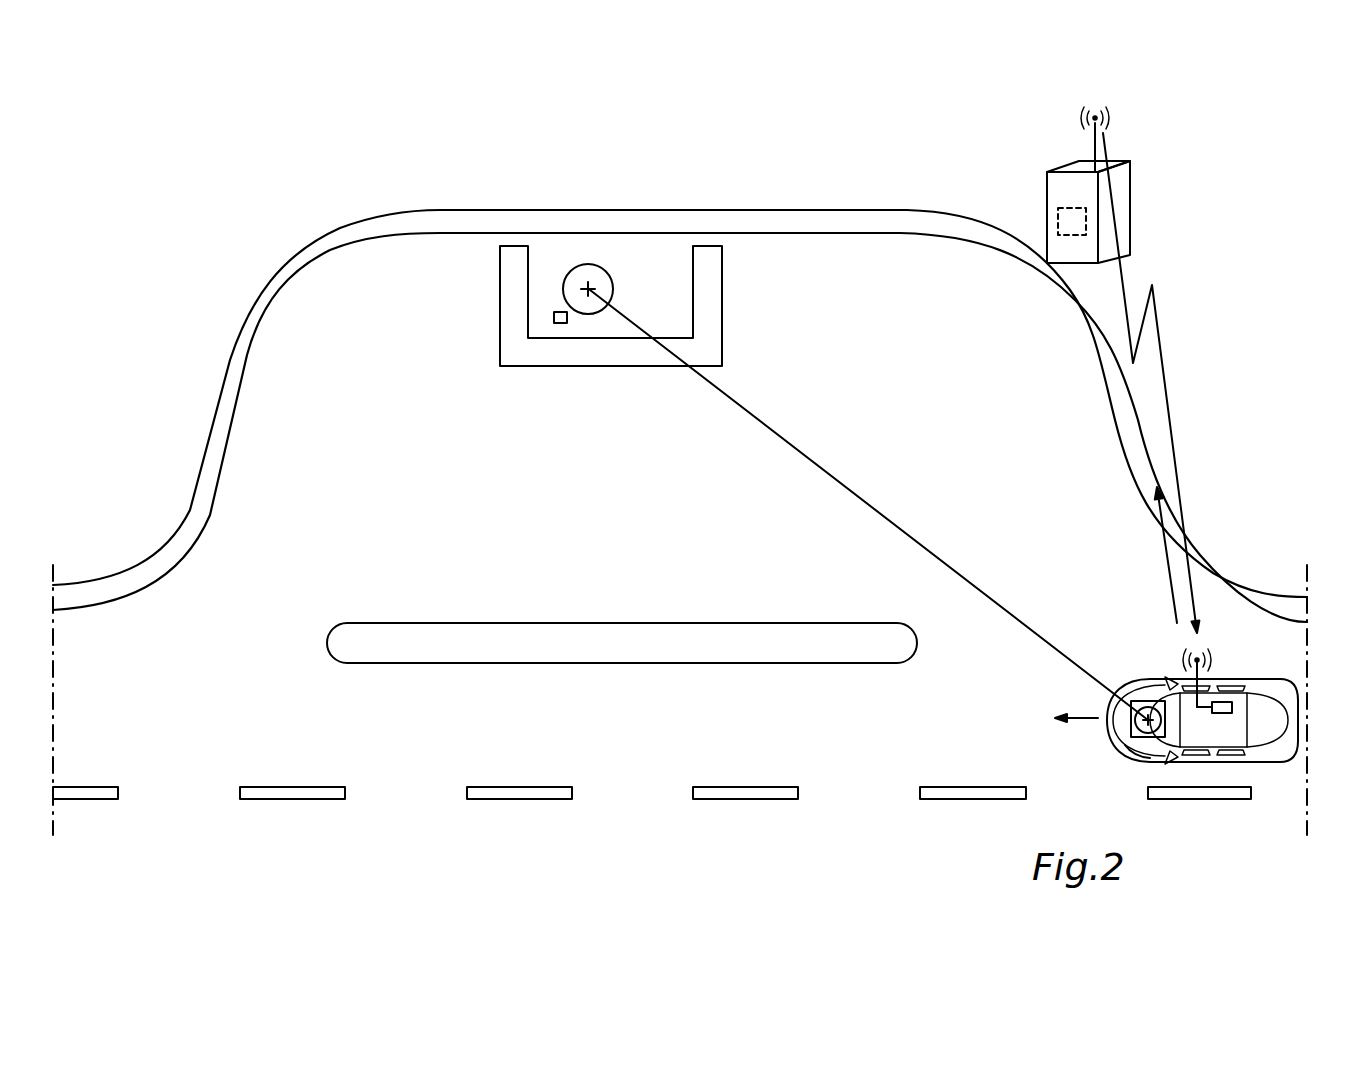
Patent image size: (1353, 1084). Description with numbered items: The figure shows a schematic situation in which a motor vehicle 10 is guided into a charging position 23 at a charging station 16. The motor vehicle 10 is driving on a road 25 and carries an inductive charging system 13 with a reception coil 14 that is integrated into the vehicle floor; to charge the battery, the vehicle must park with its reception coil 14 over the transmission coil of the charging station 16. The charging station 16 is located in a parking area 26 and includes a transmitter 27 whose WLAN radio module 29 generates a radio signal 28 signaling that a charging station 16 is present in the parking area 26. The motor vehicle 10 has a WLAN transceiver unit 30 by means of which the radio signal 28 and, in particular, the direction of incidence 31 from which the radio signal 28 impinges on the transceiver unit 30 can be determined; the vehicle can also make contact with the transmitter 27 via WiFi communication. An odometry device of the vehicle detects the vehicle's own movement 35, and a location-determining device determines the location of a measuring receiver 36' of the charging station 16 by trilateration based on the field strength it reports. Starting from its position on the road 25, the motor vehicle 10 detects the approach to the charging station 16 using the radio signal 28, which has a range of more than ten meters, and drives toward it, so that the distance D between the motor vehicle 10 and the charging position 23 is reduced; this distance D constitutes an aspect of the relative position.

The motor vehicle 10 is at (1238, 680).
The inductive charging system 13 is at (1128, 730).
The reception coil 14 is at (1132, 752).
The charging station 16 is at (548, 279).
The charging position 23 is at (590, 288).
The road 25 is at (795, 768).
The parking area 26 is at (858, 264).
The transmitter 27 is at (1125, 197).
The radio signal 28 is at (1170, 393).
The WLAN radio module 29 is at (1058, 218).
The WLAN transceiver unit 30 is at (1233, 708).
The direction of incidence 31 is at (1165, 572).
The own movement 35 is at (1090, 718).
The measuring receiver 36' is at (542, 363).
The distance D is at (835, 472).